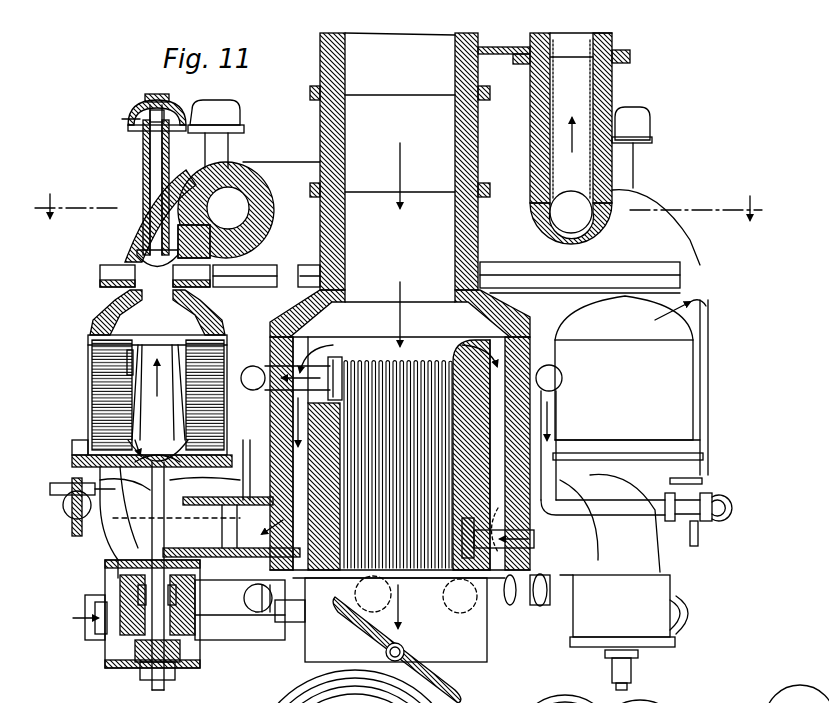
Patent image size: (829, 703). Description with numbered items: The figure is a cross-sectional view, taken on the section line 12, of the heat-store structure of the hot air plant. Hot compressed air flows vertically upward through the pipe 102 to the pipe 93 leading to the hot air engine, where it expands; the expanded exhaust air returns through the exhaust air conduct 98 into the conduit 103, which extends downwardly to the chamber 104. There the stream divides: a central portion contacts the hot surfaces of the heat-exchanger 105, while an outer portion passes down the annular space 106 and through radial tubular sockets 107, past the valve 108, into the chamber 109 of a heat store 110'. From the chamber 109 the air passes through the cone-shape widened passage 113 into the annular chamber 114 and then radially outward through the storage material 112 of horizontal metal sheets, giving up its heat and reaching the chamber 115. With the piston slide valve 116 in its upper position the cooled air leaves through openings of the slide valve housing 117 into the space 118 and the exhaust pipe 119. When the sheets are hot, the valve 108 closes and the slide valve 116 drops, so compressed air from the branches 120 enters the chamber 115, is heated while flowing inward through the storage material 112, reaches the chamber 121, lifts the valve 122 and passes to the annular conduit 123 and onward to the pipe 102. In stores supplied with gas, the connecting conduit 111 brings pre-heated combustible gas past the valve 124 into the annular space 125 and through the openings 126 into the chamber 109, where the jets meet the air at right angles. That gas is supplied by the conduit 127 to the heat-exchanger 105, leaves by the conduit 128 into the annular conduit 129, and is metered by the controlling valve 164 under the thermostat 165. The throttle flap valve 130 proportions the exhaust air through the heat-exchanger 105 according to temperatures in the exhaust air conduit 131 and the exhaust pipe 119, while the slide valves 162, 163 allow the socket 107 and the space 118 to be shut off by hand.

The section line 12 is at (391, 218).
The pipe 93 is at (582, 40).
The exhaust air conduct 98 is at (408, 38).
The pipe 102 is at (569, 120).
The conduit 103 is at (394, 303).
The chamber 104 is at (400, 416).
The heat-exchanger 105 is at (376, 360).
The annular space 106 is at (301, 424).
The tubular socket 107 is at (206, 527).
The valve 108 is at (168, 488).
The chamber 109 is at (157, 453).
The heat store 110' is at (259, 696).
The connecting conduit 111 is at (556, 431).
The storage material 112 is at (150, 388).
The cone-shape widened passage 113 is at (135, 378).
The annular chamber 114 is at (100, 356).
The chamber 115 is at (94, 425).
The piston slide valve 116 is at (130, 640).
The slide valve housing 117 is at (120, 583).
The space 118 is at (215, 600).
The exhaust pipe 119 is at (280, 618).
The branch 120 is at (86, 610).
The chamber 121 is at (155, 325).
The valve 122 is at (148, 262).
The annular conduit 123 is at (233, 208).
The valve 124 is at (62, 484).
The annular space 125 is at (74, 446).
The opening 126 is at (138, 458).
The conduit 127 is at (525, 600).
The conduit 128 is at (262, 368).
The annular conduit 129 is at (556, 380).
The throttle flap valve 130 is at (410, 656).
The exhaust air conduit 131 is at (312, 650).
The slide valve 162 is at (220, 526).
The slide valve 163 is at (257, 598).
The controlling valve 164 is at (683, 522).
The thermostat 165 is at (88, 307).